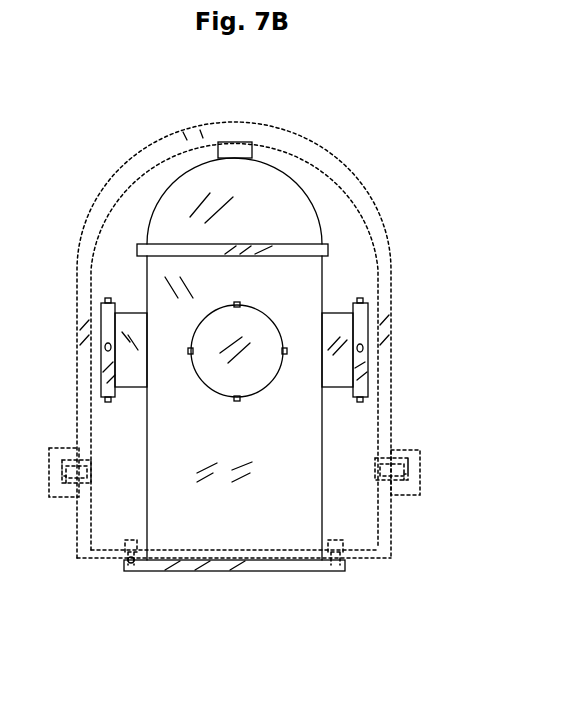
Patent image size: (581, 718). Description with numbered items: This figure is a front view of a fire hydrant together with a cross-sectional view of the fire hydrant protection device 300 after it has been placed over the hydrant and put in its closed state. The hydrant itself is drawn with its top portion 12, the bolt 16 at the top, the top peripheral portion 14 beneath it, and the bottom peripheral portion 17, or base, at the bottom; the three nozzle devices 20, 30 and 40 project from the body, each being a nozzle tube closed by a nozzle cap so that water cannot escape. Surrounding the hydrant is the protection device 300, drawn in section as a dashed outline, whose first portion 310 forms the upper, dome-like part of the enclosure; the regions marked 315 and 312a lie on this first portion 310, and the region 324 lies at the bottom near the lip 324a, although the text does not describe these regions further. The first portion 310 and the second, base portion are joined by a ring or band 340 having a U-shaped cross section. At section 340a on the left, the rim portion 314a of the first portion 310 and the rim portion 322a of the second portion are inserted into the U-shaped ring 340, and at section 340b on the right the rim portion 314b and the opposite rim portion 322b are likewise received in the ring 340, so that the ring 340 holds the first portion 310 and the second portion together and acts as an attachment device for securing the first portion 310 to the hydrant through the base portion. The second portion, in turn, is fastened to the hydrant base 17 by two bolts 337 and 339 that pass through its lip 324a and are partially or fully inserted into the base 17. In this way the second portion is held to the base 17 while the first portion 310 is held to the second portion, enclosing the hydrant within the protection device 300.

The top portion 12 is at (230, 150).
The top peripheral portion 14 is at (303, 248).
The bolt 16 is at (260, 203).
The bottom peripheral portion 17 is at (277, 566).
The nozzle device 20 is at (130, 298).
The nozzle device 30 is at (333, 312).
The nozzle device 40 is at (258, 400).
The fire hydrant protection device 300 is at (263, 374).
The first portion 310 is at (368, 200).
The cover side wall 312a is at (385, 282).
The portion of rim 314a is at (87, 466).
The portion of rim 314b is at (383, 463).
The cover dome 315 is at (178, 195).
The portion of rim 322a is at (85, 478).
The locking tab 322b is at (382, 480).
The bottom flange 324 is at (382, 530).
The lip 324a is at (100, 560).
The bolt 337 is at (133, 548).
The bolt 339 is at (333, 548).
The ring or band 340 is at (56, 448).
The section of ring 340a is at (62, 488).
The section of ring 340b is at (412, 480).